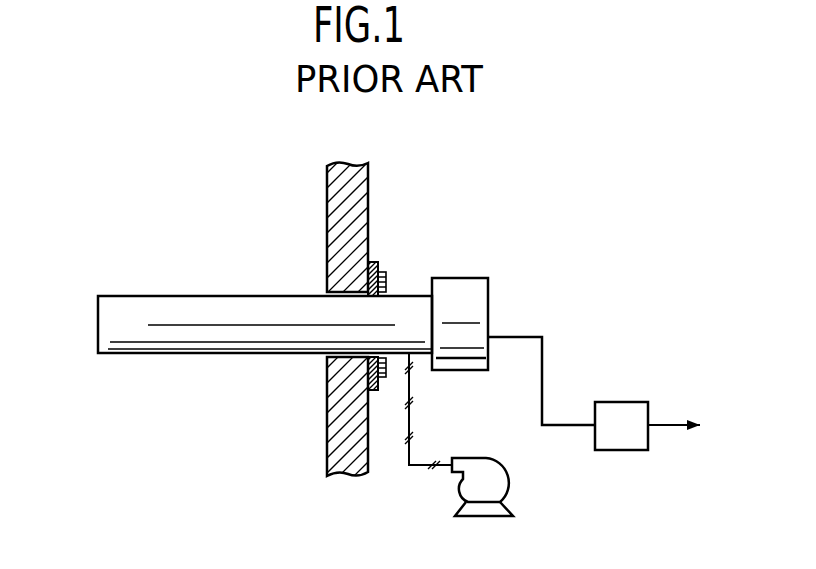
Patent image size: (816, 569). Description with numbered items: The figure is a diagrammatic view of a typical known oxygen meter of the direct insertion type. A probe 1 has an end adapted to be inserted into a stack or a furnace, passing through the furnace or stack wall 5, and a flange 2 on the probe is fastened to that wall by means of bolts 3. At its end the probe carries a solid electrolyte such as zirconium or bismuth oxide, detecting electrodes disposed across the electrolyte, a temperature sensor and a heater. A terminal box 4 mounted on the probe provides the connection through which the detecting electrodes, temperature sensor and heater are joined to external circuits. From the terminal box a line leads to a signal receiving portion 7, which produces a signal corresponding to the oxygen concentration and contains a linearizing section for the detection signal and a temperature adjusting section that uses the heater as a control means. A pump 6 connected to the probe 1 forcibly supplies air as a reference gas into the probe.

The probe 1 is at (207, 308).
The flange 2 is at (381, 265).
The bolts 3 is at (383, 279).
The terminal box 4 is at (463, 300).
The furnace or stack wall 5 is at (355, 185).
The pump 6 is at (485, 478).
The signal receiving portion 7 is at (628, 420).